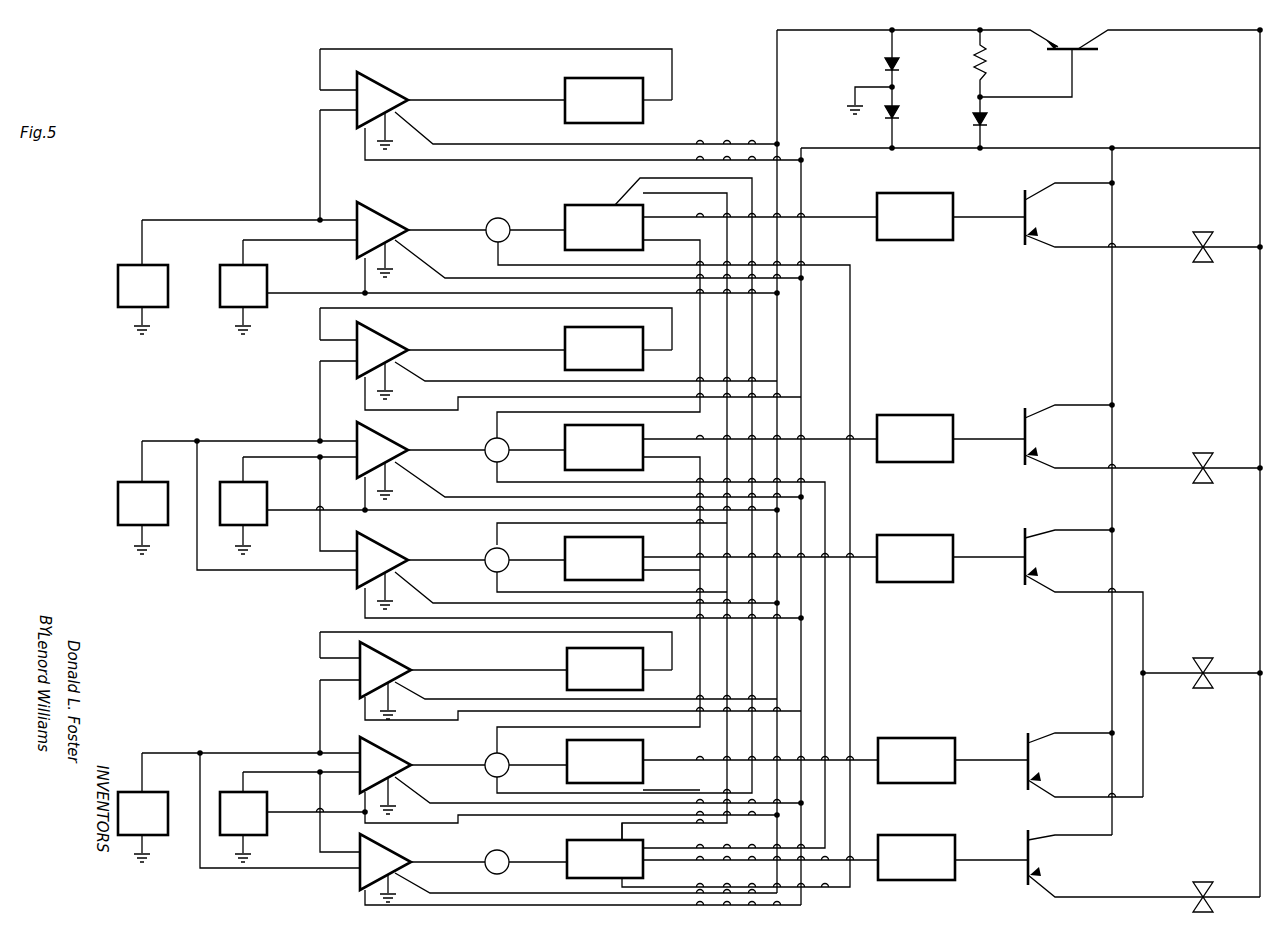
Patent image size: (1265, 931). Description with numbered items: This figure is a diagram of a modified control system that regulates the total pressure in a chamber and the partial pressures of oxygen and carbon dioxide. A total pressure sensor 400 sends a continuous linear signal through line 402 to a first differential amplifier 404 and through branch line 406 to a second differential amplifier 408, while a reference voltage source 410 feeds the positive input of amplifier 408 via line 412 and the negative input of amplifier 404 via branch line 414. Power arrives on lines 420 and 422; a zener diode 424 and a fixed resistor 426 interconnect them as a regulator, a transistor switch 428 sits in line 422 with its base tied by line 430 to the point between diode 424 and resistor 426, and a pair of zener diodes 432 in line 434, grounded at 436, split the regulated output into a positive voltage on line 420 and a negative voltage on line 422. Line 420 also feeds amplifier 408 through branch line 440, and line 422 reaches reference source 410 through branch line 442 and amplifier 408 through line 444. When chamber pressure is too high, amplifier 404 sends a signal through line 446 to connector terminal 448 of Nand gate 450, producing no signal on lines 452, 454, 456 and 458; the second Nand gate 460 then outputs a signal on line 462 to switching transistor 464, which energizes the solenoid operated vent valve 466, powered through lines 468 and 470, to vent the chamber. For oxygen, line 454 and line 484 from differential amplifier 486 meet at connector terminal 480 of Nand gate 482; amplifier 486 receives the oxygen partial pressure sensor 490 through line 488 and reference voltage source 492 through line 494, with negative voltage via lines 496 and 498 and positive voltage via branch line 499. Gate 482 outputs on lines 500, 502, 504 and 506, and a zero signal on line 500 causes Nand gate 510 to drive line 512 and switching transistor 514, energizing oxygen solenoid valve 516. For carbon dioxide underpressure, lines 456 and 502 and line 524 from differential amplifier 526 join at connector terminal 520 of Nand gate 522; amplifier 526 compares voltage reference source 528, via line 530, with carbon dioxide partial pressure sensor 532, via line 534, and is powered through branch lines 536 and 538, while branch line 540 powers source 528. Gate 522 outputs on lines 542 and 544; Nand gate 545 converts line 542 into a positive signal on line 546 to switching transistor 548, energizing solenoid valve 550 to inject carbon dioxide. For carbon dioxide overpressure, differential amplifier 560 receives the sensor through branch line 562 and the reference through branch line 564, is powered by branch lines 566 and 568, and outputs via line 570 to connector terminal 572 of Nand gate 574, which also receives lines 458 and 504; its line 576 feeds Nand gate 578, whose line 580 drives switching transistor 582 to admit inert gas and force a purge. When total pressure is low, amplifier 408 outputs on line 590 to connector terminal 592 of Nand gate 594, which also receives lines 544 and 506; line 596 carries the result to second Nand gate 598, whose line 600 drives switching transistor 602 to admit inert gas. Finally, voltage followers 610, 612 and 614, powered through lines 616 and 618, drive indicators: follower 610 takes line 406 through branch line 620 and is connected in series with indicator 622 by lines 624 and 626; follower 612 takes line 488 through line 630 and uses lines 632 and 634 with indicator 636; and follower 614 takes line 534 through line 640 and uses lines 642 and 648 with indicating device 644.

The total pressure sensor 400 is at (143, 807).
The line 402 is at (200, 772).
The first differential amplifier 404 is at (365, 837).
The branch line 406 is at (252, 753).
The second differential amplifier 408 is at (385, 775).
The reference voltage source 410 is at (243, 817).
The line 412 is at (243, 774).
The branch line 414 is at (308, 868).
The power source line 420 is at (803, 182).
The power source line 422 is at (777, 104).
The zener diode 424 is at (988, 122).
The fixed resistor 426 is at (986, 70).
The transistor switch 428 is at (1084, 60).
The line 430 is at (1064, 96).
The zener diodes 432 is at (884, 66).
The line 434 is at (896, 92).
The ground 436 is at (852, 90).
The branch line 440 is at (599, 790).
The branch line 442 is at (283, 822).
The line 444 is at (365, 801).
The line 446 is at (448, 850).
The connector terminal 448 is at (504, 872).
The Nand gate 450 is at (605, 859).
The line 452 is at (866, 850).
The line 454 is at (838, 903).
The line 456 is at (496, 488).
The line 458 is at (670, 600).
The second Nand gate 460 is at (916, 857).
The line 462 is at (974, 870).
The switching transistor 464 is at (1028, 833).
The solenoid operated valve 466 is at (1207, 880).
The line 468 is at (1260, 744).
The line 470 is at (1112, 694).
The connector terminal 480 is at (508, 222).
The Nand gate 482 is at (604, 227).
The line 484 is at (447, 217).
The differential amplifier 486 is at (382, 239).
The line 488 is at (140, 220).
The oxygen partial pressure sensor 490 is at (128, 277).
The reference voltage source 492 is at (243, 287).
The line 494 is at (240, 242).
The line 496 is at (364, 272).
The line 498 is at (287, 292).
The branch line 499 is at (599, 260).
The line 500 is at (760, 205).
The line 502 is at (598, 339).
The line 504 is at (612, 516).
The line 506 is at (622, 196).
The Nand gate 510 is at (915, 216).
The line 512 is at (989, 205).
The switching transistor 514 is at (1058, 180).
The oxygen solenoid valve 516 is at (1202, 266).
The connector terminal 520 is at (506, 460).
The Nand gate 522 is at (604, 447).
The line 524 is at (446, 437).
The differential amplifier 526 is at (382, 460).
The voltage reference source 528 is at (243, 505).
The line 530 is at (270, 470).
The carbon dioxide partial pressure sensor 532 is at (123, 497).
The line 534 is at (242, 440).
The branch line 536 is at (599, 493).
The branch line 538 is at (391, 518).
The branch line 540 is at (272, 518).
The line 542 is at (760, 432).
The line 544 is at (496, 740).
The Nand gate 545 is at (915, 438).
The line 546 is at (989, 428).
The switching transistor 548 is at (1036, 406).
The solenoid valve 550 is at (1206, 484).
The differential amplifier 560 is at (382, 570).
The branch line 562 is at (219, 576).
The branch line 564 is at (320, 552).
The branch line 566 is at (587, 589).
The branch line 568 is at (365, 610).
The line 570 is at (446, 547).
The connector terminal 572 is at (504, 570).
The Nand gate 574 is at (604, 558).
The line 576 is at (760, 548).
The Nand gate 578 is at (915, 558).
The line 580 is at (982, 560).
The switching transistor 582 is at (1034, 528).
The line 590 is at (448, 753).
The connector terminal 592 is at (504, 775).
The Nand gate 594 is at (605, 761).
The line 596 is at (760, 749).
The second Nand gate 598 is at (916, 760).
The line 600 is at (991, 749).
The switching transistor 602 is at (1038, 726).
The voltage follower 610 is at (365, 680).
The voltage follower 612 is at (364, 110).
The voltage follower 614 is at (364, 360).
The line 616 is at (586, 405).
The line 618 is at (583, 424).
The branch line 620 is at (320, 712).
The indicator 622 is at (619, 669).
The line 624 is at (415, 634).
The line 626 is at (489, 660).
The line 630 is at (320, 160).
The line 632 is at (461, 52).
The line 634 is at (470, 104).
The indicator 636 is at (618, 100).
The line 640 is at (320, 396).
The line 642 is at (300, 331).
The indicating device 644 is at (618, 348).
The conductor 648 is at (521, 312).